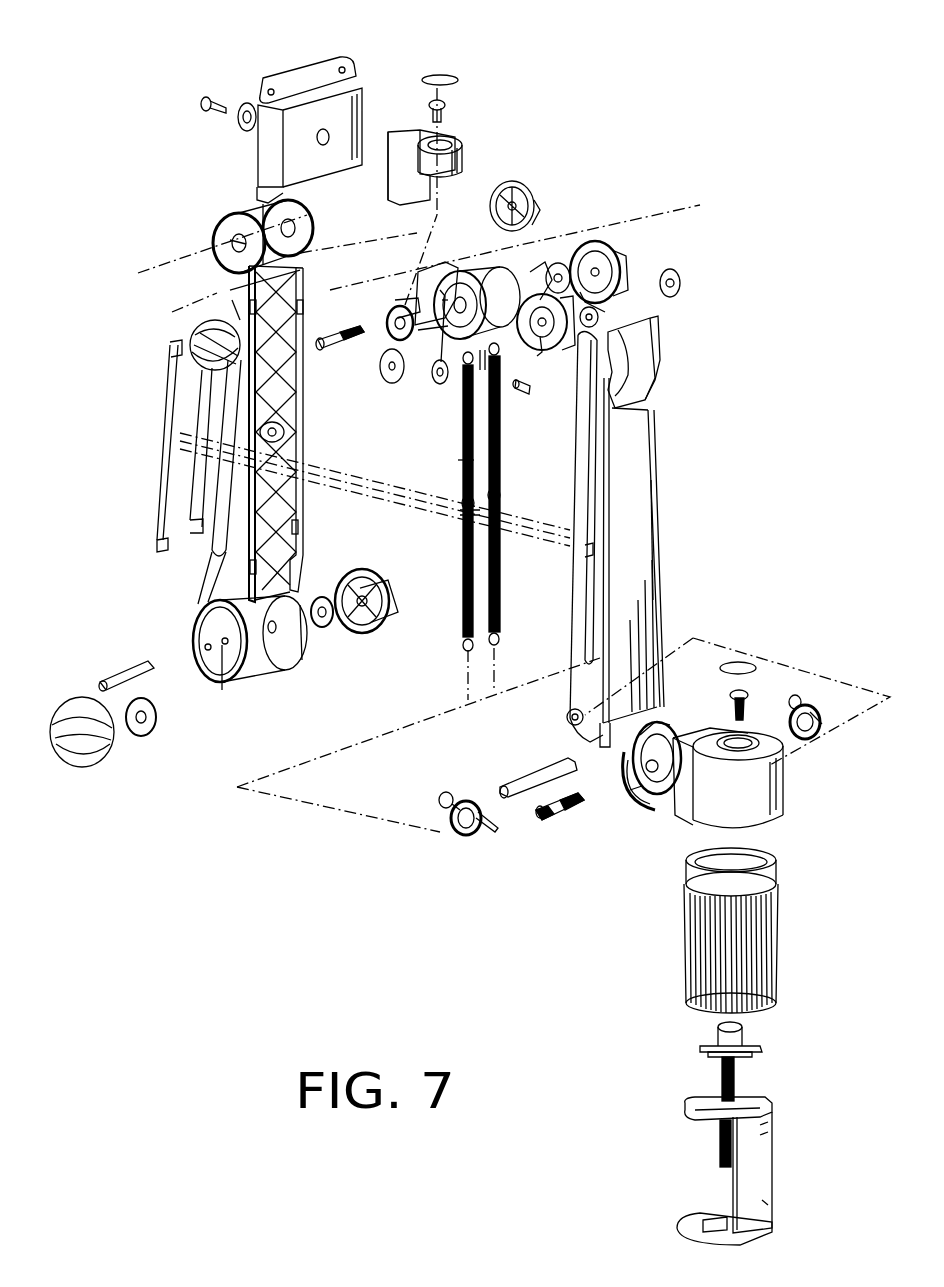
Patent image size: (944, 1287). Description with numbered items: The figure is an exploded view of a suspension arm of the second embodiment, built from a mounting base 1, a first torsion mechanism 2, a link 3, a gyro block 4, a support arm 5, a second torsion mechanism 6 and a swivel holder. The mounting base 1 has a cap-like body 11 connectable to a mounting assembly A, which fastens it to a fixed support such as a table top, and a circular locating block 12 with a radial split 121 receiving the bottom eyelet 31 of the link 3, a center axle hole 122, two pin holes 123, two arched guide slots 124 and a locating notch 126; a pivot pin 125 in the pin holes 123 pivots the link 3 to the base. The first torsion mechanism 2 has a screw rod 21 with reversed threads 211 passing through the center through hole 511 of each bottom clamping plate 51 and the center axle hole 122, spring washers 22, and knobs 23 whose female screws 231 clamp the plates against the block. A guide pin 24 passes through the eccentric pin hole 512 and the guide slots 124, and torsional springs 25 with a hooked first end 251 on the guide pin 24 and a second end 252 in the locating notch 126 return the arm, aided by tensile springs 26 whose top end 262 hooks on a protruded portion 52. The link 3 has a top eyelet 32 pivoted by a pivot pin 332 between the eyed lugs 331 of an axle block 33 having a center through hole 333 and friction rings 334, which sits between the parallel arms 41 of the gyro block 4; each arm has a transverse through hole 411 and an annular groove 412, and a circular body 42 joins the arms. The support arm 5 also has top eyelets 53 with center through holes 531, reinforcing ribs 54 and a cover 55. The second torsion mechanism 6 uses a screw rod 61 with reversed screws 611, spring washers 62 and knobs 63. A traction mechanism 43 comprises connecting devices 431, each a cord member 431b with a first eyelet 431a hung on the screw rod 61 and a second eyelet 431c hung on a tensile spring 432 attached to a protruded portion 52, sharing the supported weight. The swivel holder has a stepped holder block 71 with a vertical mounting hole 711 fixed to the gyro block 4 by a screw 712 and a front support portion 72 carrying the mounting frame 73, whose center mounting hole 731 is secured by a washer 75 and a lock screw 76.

The mounting base 1 is at (790, 812).
The cap-like body 11 is at (782, 778).
The circular locating block 12 is at (650, 805).
The split 121 is at (668, 774).
The center axle hole 122 is at (637, 800).
The pin holes 123 is at (690, 750).
The arched guide slots 124 is at (647, 823).
The pivot pin 125 is at (567, 780).
The locating notch 126 is at (680, 775).
The first torsion mechanism 2 is at (370, 648).
The screw rod 21 is at (543, 803).
The reversed threads 211 is at (508, 812).
The spring washers 22 is at (321, 628).
The knobs 23 is at (386, 640).
The female screw 231 is at (364, 604).
The guide pin 24 is at (125, 668).
The torsional springs 25 is at (466, 835).
The hooked first end 251 is at (444, 808).
The second end 252 is at (491, 823).
The tensile springs 26 is at (500, 600).
The top end 262 is at (500, 495).
The link 3 is at (583, 468).
The bottom eyelet 31 is at (570, 728).
The top eyelet 32 is at (598, 318).
The axle block 33 is at (620, 272).
The eyed lugs 331 is at (622, 338).
The pivot pin 332 is at (575, 412).
The center through hole 333 is at (595, 395).
The friction rings 334 is at (680, 282).
The gyro block 4 is at (520, 268).
The parallel arms 41 is at (442, 350).
The transverse through hole 411 is at (520, 192).
The annular groove 412 is at (528, 392).
The circular body 42 is at (398, 322).
The traction mechanism 43 is at (508, 428).
The connecting devices 431 is at (437, 382).
The first eyelet 431a is at (402, 312).
The cord member 431b is at (432, 382).
The second eyelet 431c is at (460, 475).
The tensile springs 432 is at (470, 528).
The support arm 5 is at (226, 405).
The bottom clamping plates 51 is at (210, 662).
The center through hole 511 is at (226, 650).
The eccentric pin hole 512 is at (213, 636).
The protruded portions 52 is at (302, 520).
The top eyelets 53 is at (236, 232).
The center through hole 531 is at (234, 250).
The reinforcing ribs 54 is at (232, 296).
The cover 55 is at (660, 508).
The second torsion mechanism 6 is at (182, 378).
The screw rod 61 is at (330, 340).
The reversed screws 611 is at (322, 360).
The spring washers 62 is at (622, 272).
The knobs 63 is at (195, 330).
The stepped holder block 71 is at (468, 150).
The vertical mounting hole 711 is at (447, 140).
The screw 712 is at (445, 112).
The front support portion 72 is at (388, 170).
The mounting frame 73 is at (314, 118).
The center mounting hole 731 is at (316, 136).
The washer 75 is at (246, 104).
The lock screw 76 is at (200, 102).
The mounting assembly A is at (670, 972).